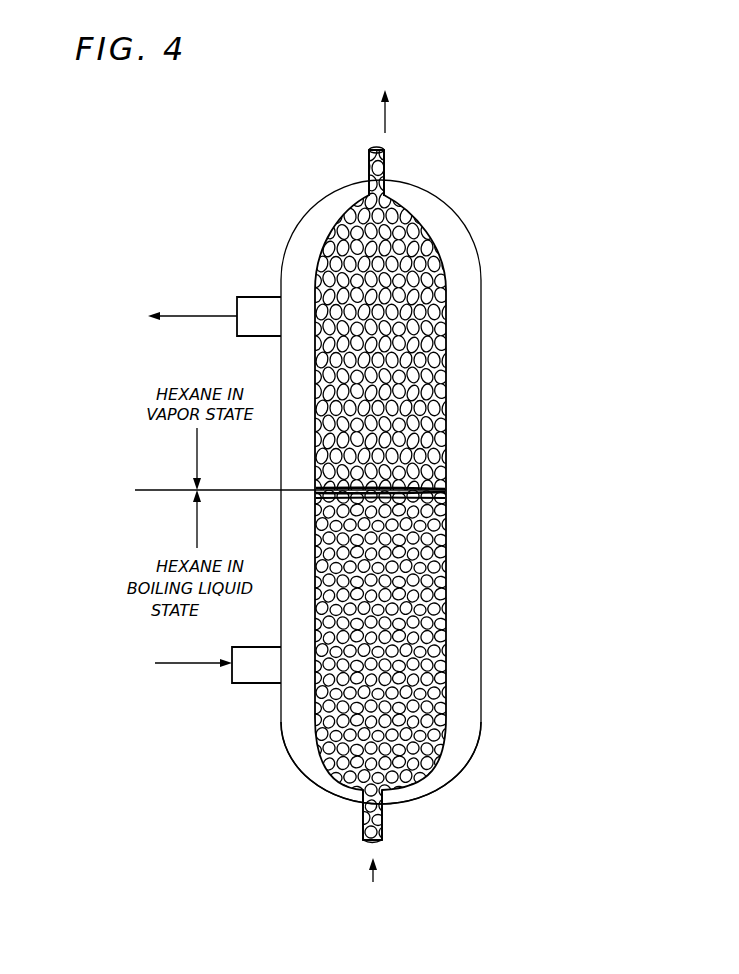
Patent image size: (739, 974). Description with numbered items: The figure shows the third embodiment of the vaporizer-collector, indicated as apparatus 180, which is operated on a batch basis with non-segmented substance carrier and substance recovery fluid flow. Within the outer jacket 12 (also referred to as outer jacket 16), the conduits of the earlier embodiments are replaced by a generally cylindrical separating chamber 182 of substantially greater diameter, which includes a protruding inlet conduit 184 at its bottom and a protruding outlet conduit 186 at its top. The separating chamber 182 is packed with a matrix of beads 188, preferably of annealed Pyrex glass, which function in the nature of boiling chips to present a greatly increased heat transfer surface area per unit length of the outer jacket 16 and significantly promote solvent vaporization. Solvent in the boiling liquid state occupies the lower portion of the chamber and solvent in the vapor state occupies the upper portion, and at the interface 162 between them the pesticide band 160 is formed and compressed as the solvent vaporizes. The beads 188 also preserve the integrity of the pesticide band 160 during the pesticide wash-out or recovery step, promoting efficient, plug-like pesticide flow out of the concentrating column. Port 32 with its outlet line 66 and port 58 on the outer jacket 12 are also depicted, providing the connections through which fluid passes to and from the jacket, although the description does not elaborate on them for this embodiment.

The outer jacket 12 is at (481, 290).
The outer jacket 16 is at (470, 735).
The vapor outlet port 32 is at (258, 297).
The liquid inlet port 58 is at (200, 664).
The outlet line to 68 66 is at (212, 317).
The pesticide band 160 is at (446, 492).
The interface 162 is at (140, 489).
The apparatus 180 is at (502, 551).
The separating chamber 182 is at (447, 357).
The inlet conduit 184 is at (383, 823).
The outlet conduit 186 is at (385, 163).
The matrix of beads 188 is at (440, 638).